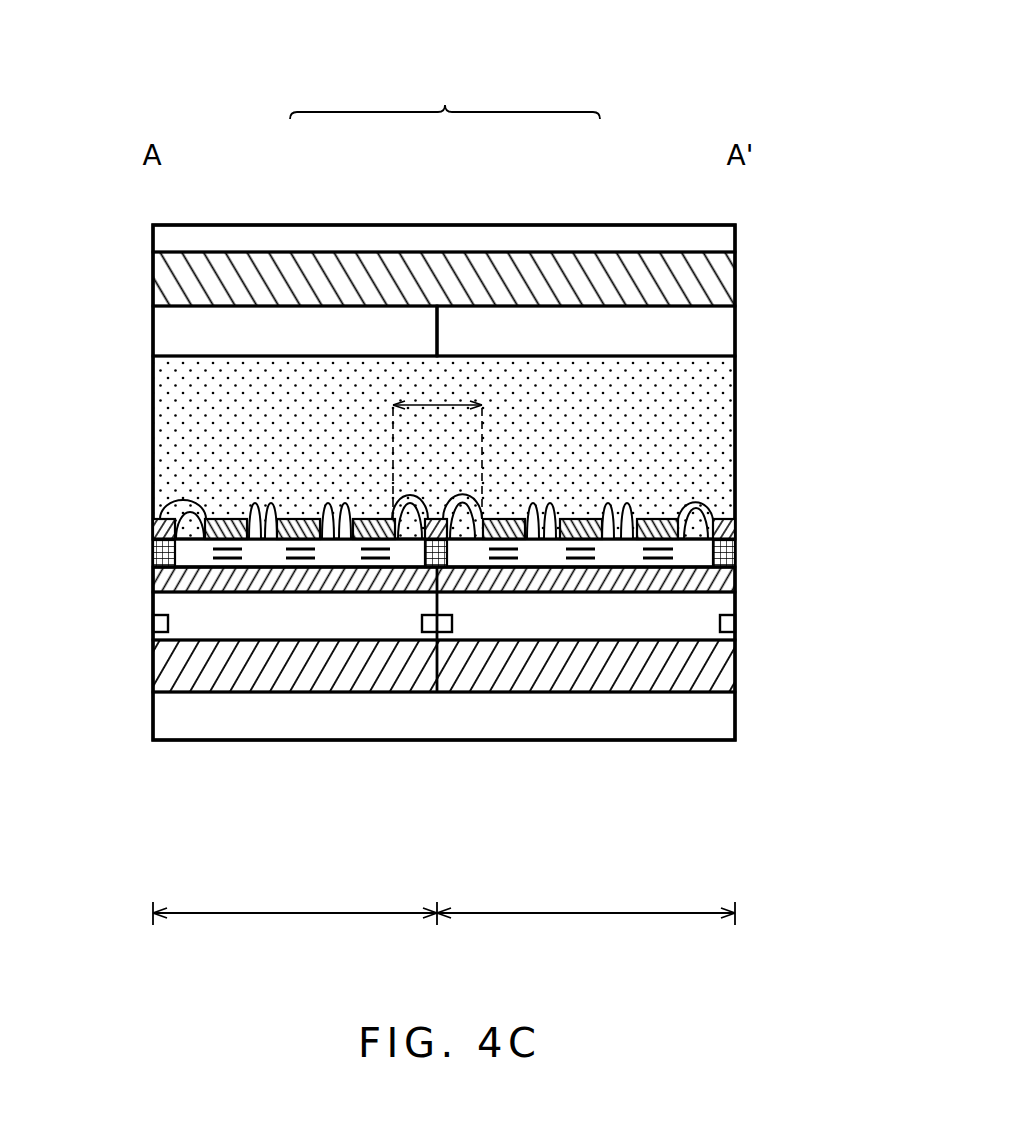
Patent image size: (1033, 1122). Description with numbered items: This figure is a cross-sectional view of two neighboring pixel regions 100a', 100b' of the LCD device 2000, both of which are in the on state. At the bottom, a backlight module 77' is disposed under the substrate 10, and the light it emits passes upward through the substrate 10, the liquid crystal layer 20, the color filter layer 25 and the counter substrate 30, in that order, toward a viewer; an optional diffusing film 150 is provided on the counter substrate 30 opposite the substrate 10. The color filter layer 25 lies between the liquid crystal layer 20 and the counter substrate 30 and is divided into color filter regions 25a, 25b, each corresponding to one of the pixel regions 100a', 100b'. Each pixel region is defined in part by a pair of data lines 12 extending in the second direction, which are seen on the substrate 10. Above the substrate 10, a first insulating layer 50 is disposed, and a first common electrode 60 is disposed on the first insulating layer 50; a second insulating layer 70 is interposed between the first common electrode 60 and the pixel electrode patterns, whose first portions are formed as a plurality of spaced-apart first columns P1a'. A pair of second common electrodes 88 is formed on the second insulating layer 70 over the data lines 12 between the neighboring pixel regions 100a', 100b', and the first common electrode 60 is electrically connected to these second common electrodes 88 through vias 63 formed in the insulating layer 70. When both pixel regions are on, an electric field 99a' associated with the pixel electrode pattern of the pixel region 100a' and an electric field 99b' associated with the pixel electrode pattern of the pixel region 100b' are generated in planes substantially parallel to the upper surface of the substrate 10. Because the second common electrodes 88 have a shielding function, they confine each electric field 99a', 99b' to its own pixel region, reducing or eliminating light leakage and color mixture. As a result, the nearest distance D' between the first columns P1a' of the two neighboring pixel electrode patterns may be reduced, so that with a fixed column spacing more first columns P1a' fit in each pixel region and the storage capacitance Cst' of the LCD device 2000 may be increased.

The LCD device 2000 is at (698, 92).
The diffusing film 150 is at (723, 239).
The counter substrate 30 is at (723, 280).
The color filter layer 25 is at (445, 94).
The color filter region 25b is at (317, 325).
The color filter region 25a is at (561, 325).
The liquid crystal layer 20 is at (723, 378).
The electric field 99b' is at (380, 479).
The electric field 99a' is at (495, 479).
The nearest distance D' is at (437, 444).
The first columns P1a' is at (431, 669).
The vias 63 is at (153, 557).
The second insulating layer 70 is at (700, 554).
The storage capacitance Cst' is at (443, 707).
The second common electrodes 88 is at (178, 567).
The first common electrode 60 is at (723, 586).
The first insulating layer 50 is at (723, 605).
The data lines 12 is at (153, 624).
The substrate 10 is at (723, 673).
The backlight module 77' is at (483, 716).
The pixel region 100b' is at (295, 930).
The pixel region 100a' is at (586, 930).